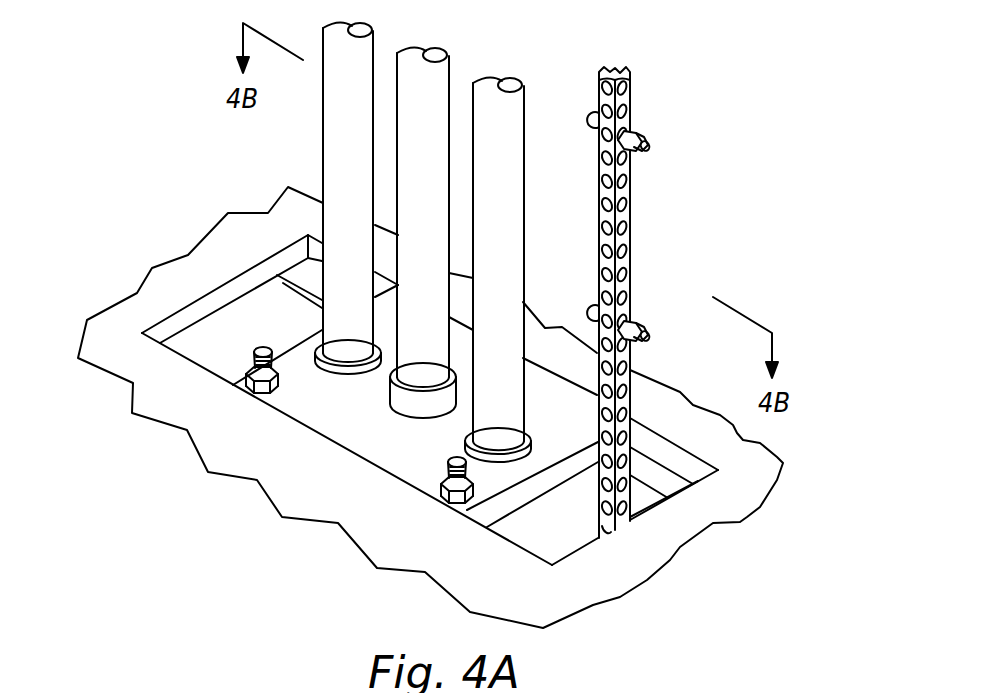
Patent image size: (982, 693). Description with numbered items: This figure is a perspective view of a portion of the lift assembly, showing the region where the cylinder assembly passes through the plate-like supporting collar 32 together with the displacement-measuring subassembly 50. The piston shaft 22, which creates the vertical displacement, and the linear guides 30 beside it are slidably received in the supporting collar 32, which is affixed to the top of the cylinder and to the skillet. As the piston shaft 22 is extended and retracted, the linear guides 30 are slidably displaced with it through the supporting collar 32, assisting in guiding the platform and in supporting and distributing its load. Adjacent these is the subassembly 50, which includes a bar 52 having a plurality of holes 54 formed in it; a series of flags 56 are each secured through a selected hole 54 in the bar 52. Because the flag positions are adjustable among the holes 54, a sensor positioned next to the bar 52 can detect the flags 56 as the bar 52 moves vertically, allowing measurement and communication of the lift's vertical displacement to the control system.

The piston shaft 22 is at (440, 118).
The linear guides 30 is at (348, 141).
The supporting collar 32 is at (372, 427).
The subassembly 50 is at (717, 302).
The bar 52 is at (628, 286).
The holes 54 is at (628, 233).
The flags 56 is at (644, 143).